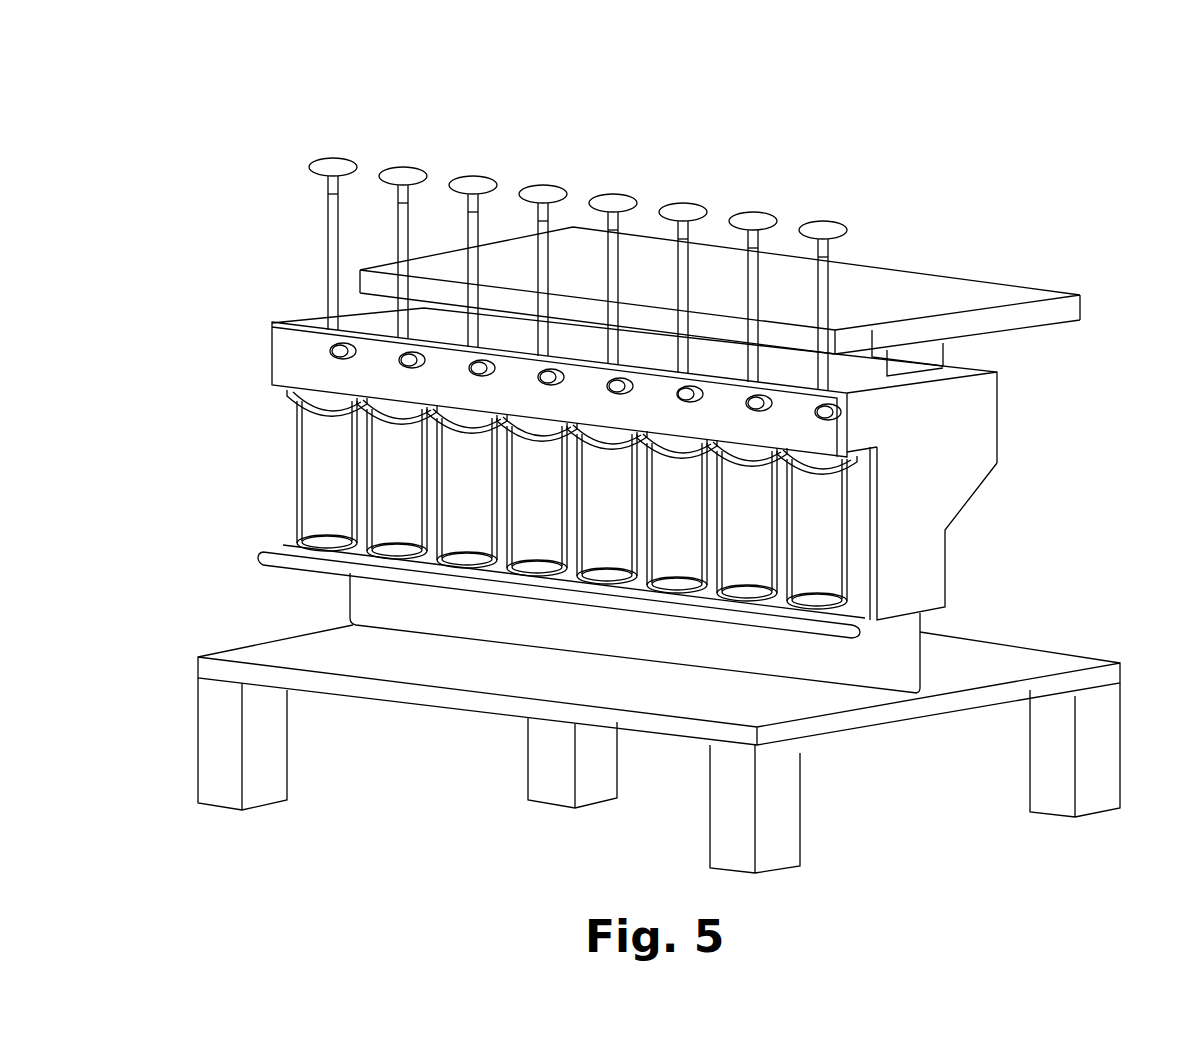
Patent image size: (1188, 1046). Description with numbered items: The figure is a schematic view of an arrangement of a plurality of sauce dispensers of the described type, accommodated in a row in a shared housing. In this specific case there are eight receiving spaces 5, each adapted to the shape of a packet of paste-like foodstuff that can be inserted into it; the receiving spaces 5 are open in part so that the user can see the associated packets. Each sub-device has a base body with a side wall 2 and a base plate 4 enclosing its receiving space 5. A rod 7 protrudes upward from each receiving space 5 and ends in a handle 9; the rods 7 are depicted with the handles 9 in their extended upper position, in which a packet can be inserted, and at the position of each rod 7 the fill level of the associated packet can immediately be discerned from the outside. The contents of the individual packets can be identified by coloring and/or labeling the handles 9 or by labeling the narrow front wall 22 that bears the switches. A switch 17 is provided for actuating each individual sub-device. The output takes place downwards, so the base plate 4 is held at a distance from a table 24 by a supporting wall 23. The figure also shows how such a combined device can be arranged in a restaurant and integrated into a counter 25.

The side wall 2 is at (963, 415).
The base plate 4 is at (273, 563).
The receiving space 5 is at (317, 453).
The rod 7 is at (327, 218).
The handle 9 is at (332, 158).
The switch 17 is at (323, 351).
The narrow front wall 22 is at (813, 433).
The supporting wall 23 is at (848, 668).
The table 24 is at (1023, 667).
The counter 25 is at (970, 312).